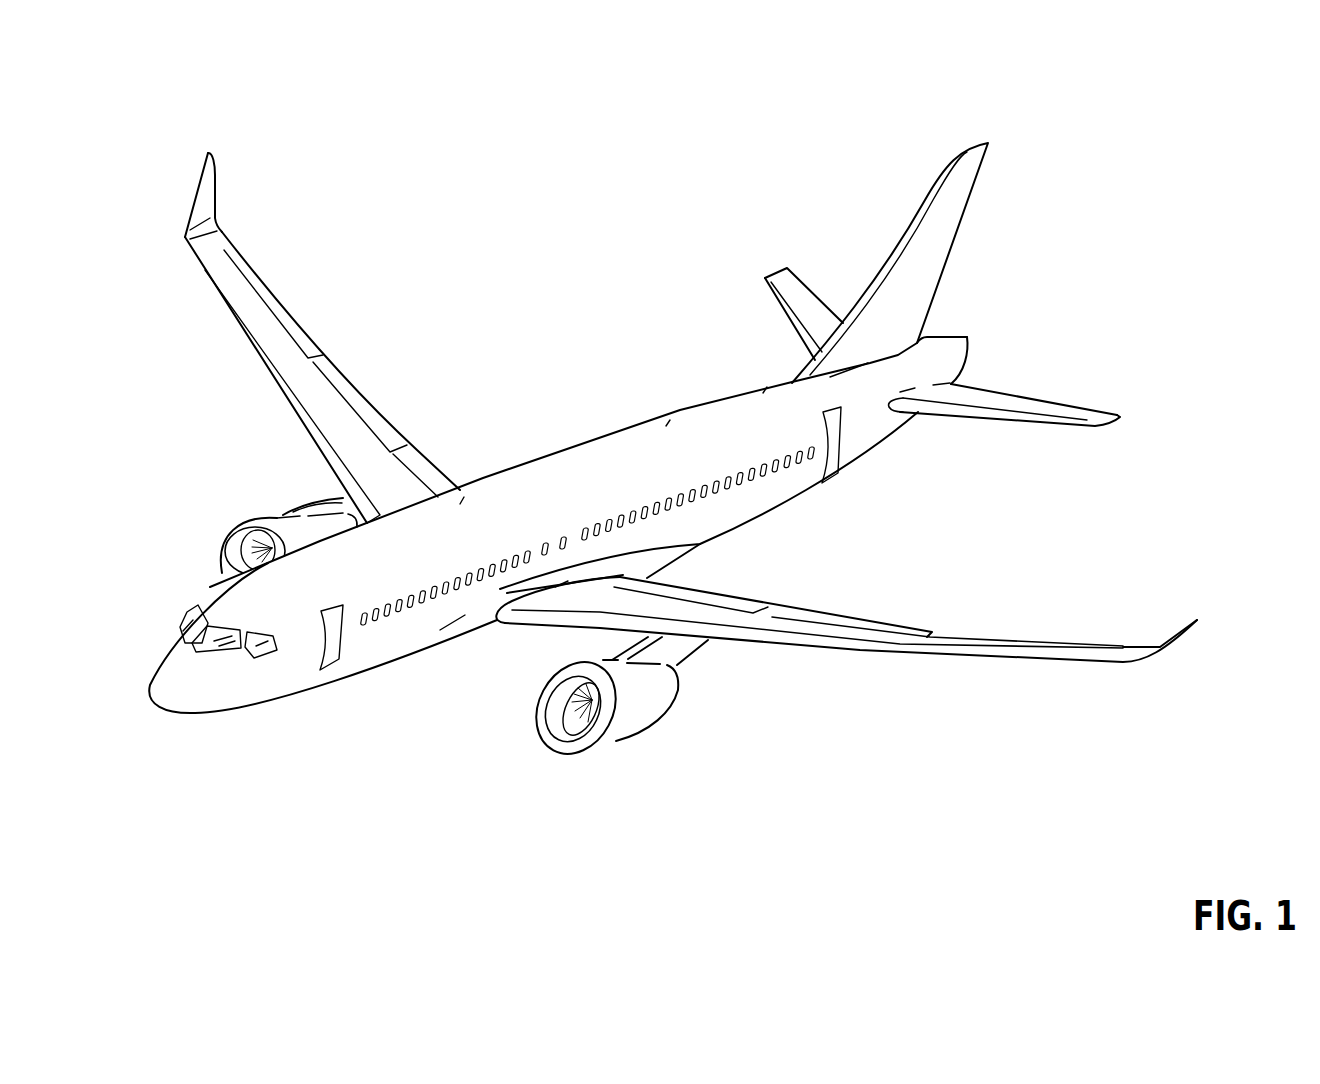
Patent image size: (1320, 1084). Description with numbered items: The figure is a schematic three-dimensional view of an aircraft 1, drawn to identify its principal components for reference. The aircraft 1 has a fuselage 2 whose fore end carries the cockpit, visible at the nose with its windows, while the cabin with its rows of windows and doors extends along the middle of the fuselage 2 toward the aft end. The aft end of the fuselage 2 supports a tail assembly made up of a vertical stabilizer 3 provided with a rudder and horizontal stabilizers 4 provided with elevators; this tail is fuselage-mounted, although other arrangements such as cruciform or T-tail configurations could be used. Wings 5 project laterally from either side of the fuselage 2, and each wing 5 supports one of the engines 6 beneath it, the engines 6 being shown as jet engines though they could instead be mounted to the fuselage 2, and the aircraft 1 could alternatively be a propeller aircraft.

The aircraft 1 is at (194, 109).
The fuselage 2 is at (385, 650).
The vertical stabilizer 3 is at (933, 209).
The horizontal stabilizers 4 is at (802, 311).
The wings 5 is at (350, 427).
The engines 6 is at (278, 521).